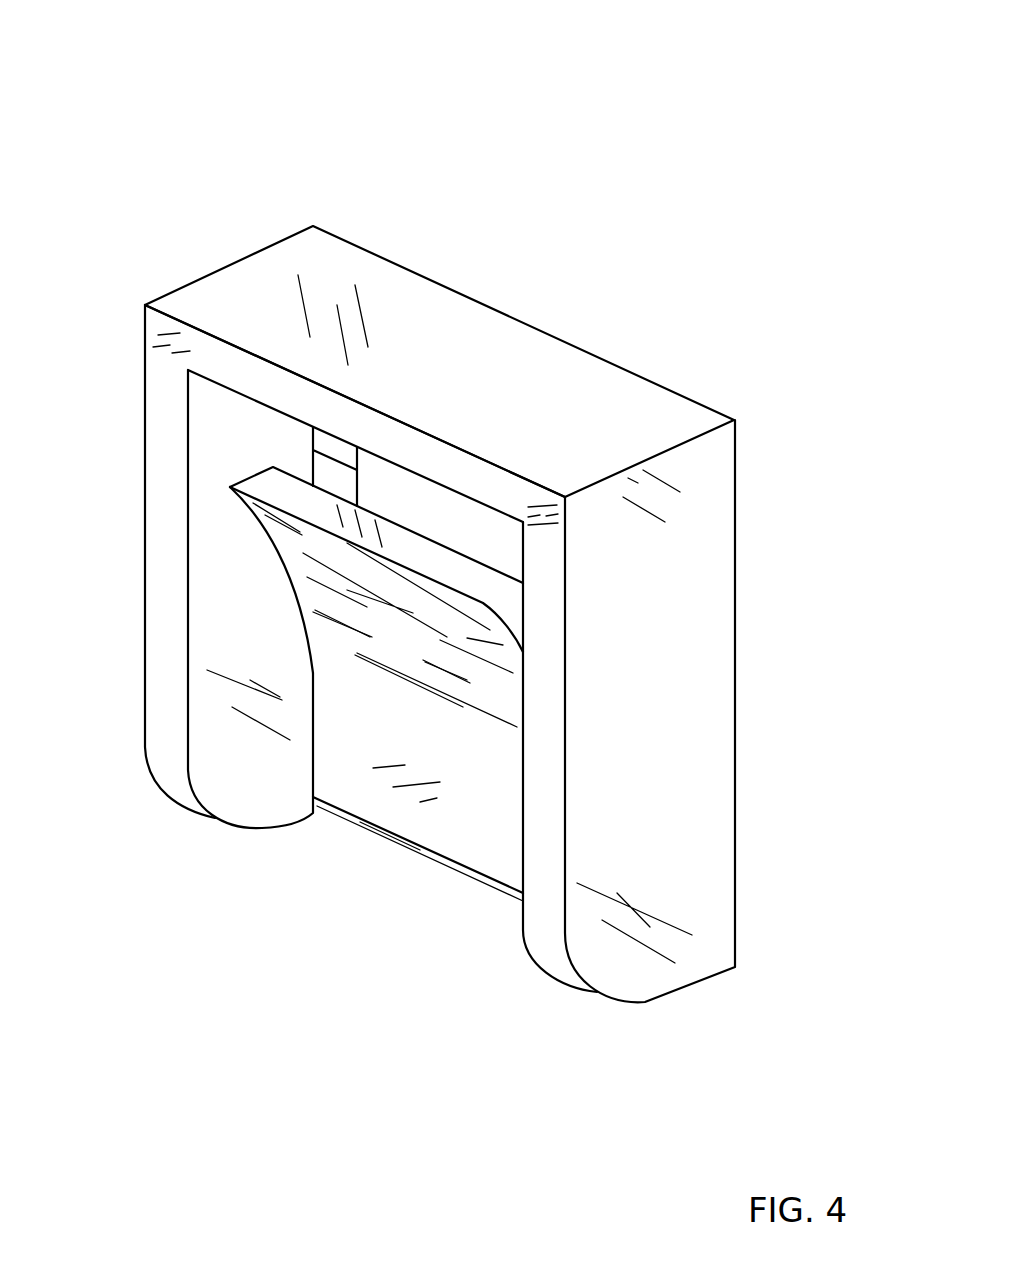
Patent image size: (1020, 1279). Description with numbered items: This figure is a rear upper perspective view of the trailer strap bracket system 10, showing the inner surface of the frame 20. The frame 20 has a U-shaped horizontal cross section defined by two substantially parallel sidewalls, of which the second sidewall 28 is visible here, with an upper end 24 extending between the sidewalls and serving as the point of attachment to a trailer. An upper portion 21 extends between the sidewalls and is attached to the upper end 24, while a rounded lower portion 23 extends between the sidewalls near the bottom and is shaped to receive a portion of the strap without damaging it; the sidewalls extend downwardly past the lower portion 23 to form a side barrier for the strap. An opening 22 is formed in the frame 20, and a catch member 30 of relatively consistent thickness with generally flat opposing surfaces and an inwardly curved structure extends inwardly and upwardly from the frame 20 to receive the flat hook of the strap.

The trailer strap bracket system 10 is at (718, 88).
The frame 20 is at (228, 262).
The upper portion 21 is at (467, 510).
The opening 22 is at (333, 478).
The lower portion 23 is at (477, 870).
The upper end 24 is at (325, 255).
The second sidewall 28 is at (698, 722).
The catch member 30 is at (293, 555).